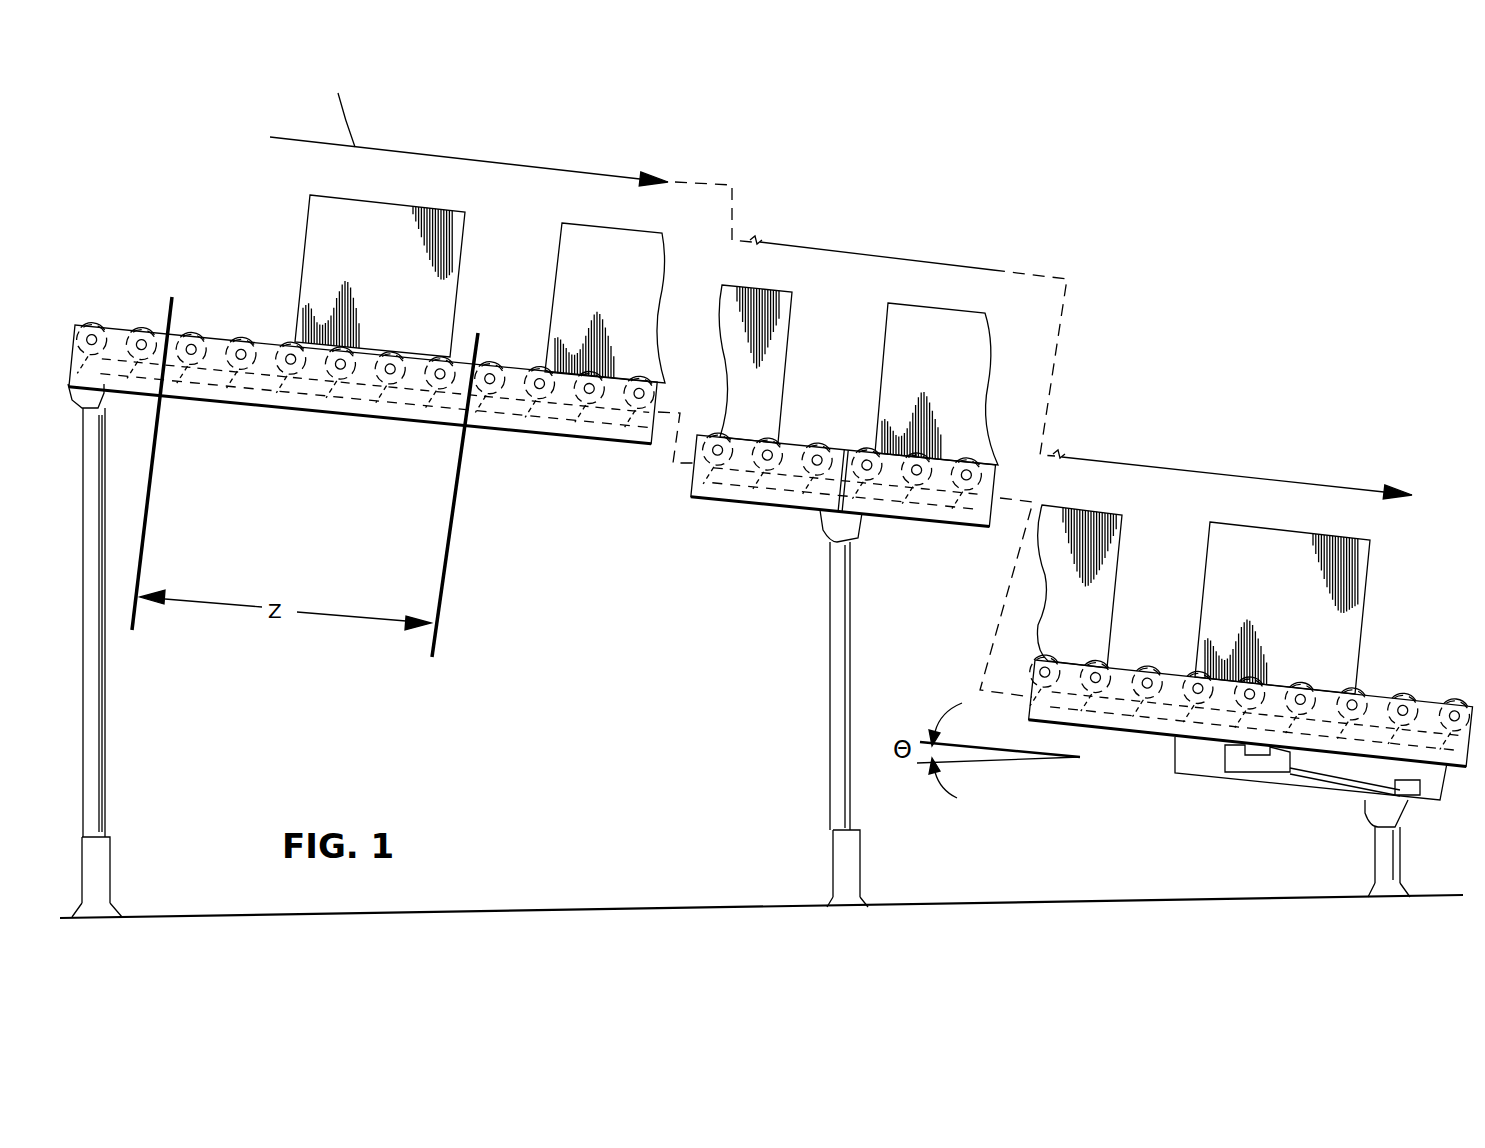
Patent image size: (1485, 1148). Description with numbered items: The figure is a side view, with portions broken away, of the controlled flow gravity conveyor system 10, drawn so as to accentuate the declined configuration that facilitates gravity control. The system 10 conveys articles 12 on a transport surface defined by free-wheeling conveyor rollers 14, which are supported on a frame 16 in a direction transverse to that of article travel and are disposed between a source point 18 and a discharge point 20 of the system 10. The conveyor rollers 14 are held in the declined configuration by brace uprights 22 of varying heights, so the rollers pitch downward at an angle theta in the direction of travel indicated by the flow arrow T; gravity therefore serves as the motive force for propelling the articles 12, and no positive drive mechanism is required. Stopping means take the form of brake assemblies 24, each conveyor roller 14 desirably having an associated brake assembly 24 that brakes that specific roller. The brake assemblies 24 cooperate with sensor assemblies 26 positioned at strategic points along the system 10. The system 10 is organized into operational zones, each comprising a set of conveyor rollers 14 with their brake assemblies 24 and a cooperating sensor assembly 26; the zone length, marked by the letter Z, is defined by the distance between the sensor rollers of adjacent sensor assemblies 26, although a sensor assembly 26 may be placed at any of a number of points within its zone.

The controlled flow gravity conveyor system 10 is at (650, 126).
The articles 12 is at (1238, 530).
The conveyor rollers 14 is at (247, 333).
The frame 16 is at (598, 440).
The source point 18 is at (105, 280).
The discharge point 20 is at (1425, 680).
The brace uprights 22 is at (838, 704).
The brake assembly 24 is at (923, 508).
The sensor assembly 26 is at (815, 424).